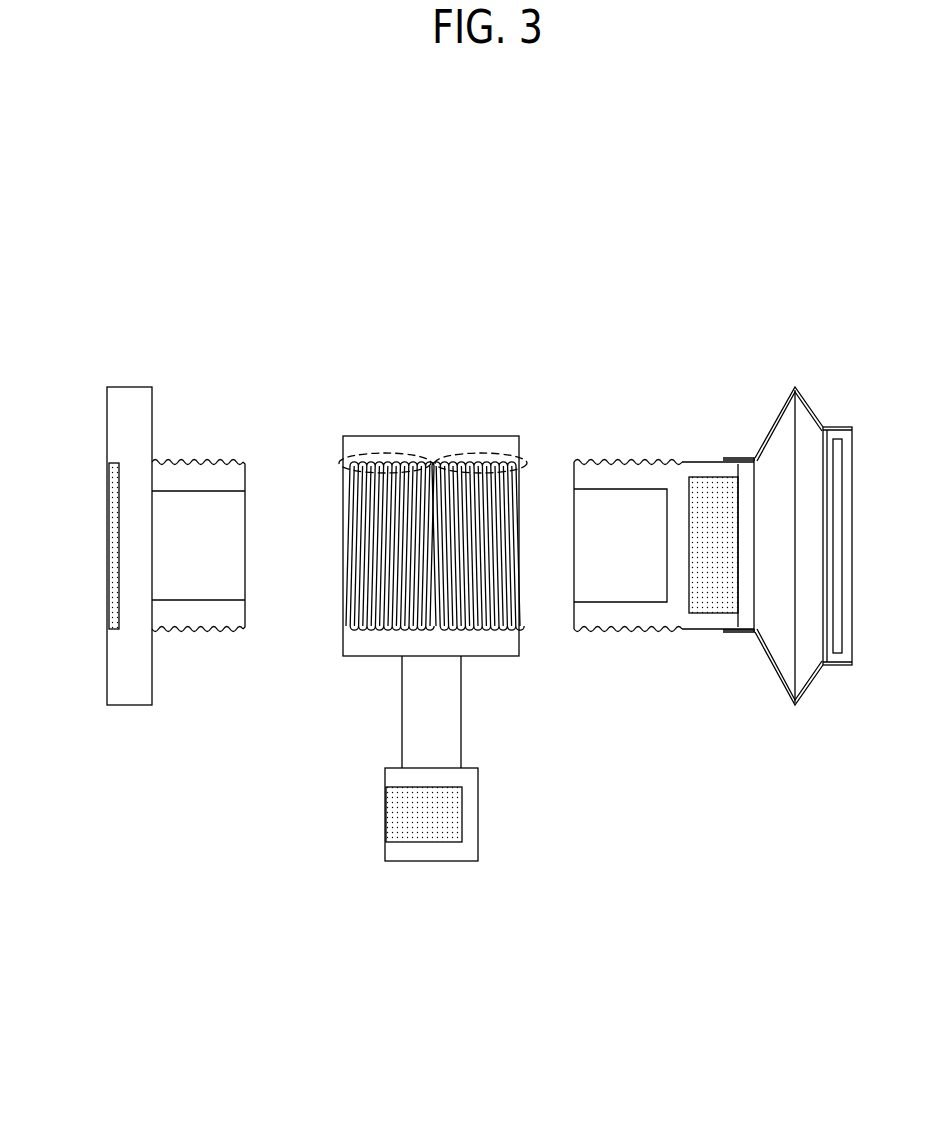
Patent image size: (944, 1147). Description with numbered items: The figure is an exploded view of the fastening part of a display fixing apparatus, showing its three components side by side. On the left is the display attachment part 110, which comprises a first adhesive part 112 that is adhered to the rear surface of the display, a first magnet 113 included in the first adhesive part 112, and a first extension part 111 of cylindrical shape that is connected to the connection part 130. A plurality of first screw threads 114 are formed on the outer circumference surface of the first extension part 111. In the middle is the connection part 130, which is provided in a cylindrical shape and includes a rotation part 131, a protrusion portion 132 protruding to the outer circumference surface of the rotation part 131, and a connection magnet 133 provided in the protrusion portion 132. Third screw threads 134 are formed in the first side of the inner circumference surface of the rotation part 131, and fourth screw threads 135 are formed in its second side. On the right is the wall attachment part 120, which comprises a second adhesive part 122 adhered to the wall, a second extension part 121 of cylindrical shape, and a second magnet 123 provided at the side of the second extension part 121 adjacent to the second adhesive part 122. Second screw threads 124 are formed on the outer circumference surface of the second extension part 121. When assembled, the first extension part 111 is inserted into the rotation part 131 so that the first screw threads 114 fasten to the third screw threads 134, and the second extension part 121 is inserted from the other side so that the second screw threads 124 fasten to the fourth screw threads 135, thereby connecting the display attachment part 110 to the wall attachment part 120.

The display attachment part 110 is at (145, 597).
The first extension part 111 is at (198, 582).
The first adhesive part 112 is at (127, 705).
The first magnet 113 is at (110, 569).
The first screw threads 114 is at (210, 460).
The wall attachment part 120 is at (713, 671).
The second extension part 121 is at (664, 656).
The second adhesive part 122 is at (838, 665).
The second magnet 123 is at (712, 573).
The second screw threads 124 is at (642, 460).
The connection part 130 is at (455, 669).
The rotation part 131 is at (498, 656).
The protrusion portion 132 is at (478, 814).
The connection magnet 133 is at (433, 842).
The third screw threads 134 is at (381, 452).
The fourth screw threads 135 is at (481, 452).